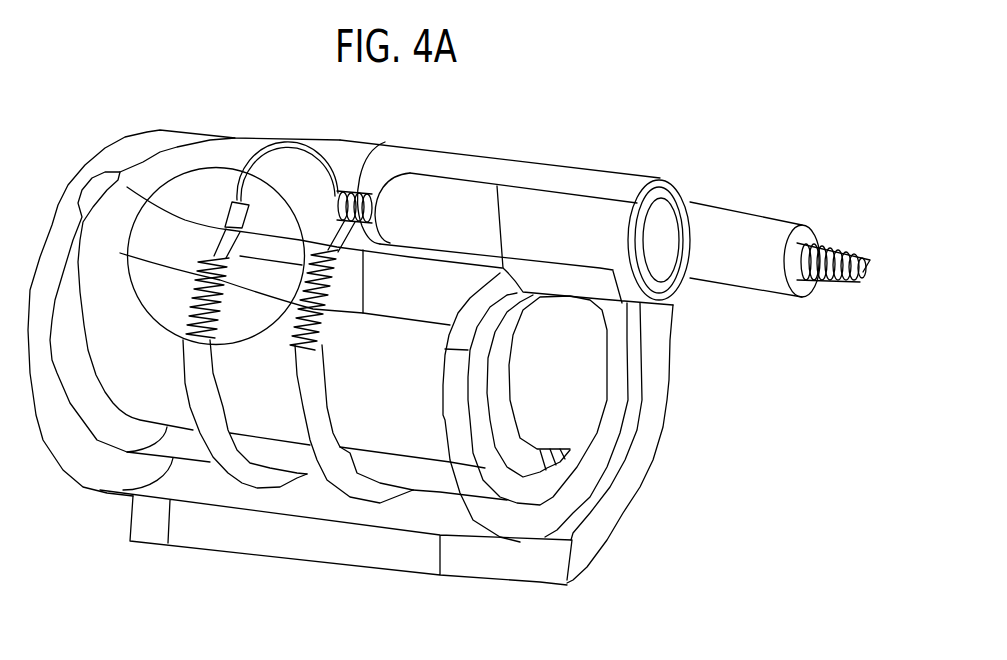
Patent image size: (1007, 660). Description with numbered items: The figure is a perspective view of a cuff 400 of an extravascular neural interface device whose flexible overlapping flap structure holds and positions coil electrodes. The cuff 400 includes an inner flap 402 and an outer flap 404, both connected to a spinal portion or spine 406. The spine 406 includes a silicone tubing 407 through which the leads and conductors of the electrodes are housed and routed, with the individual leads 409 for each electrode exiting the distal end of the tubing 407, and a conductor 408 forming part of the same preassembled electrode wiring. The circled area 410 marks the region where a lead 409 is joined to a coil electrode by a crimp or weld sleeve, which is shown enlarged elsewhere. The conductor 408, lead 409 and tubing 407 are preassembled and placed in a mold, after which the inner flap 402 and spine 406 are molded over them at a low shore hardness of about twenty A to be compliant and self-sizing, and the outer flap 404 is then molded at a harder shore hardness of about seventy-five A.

The cuff 400 is at (73, 120).
The inner flap 402 is at (109, 406).
The outer flap 404 is at (653, 468).
The spine 406 is at (453, 168).
The silicone tubing 407 is at (720, 225).
The conductor 408 is at (847, 247).
The lead 409 is at (287, 163).
The circled area 410 is at (200, 167).